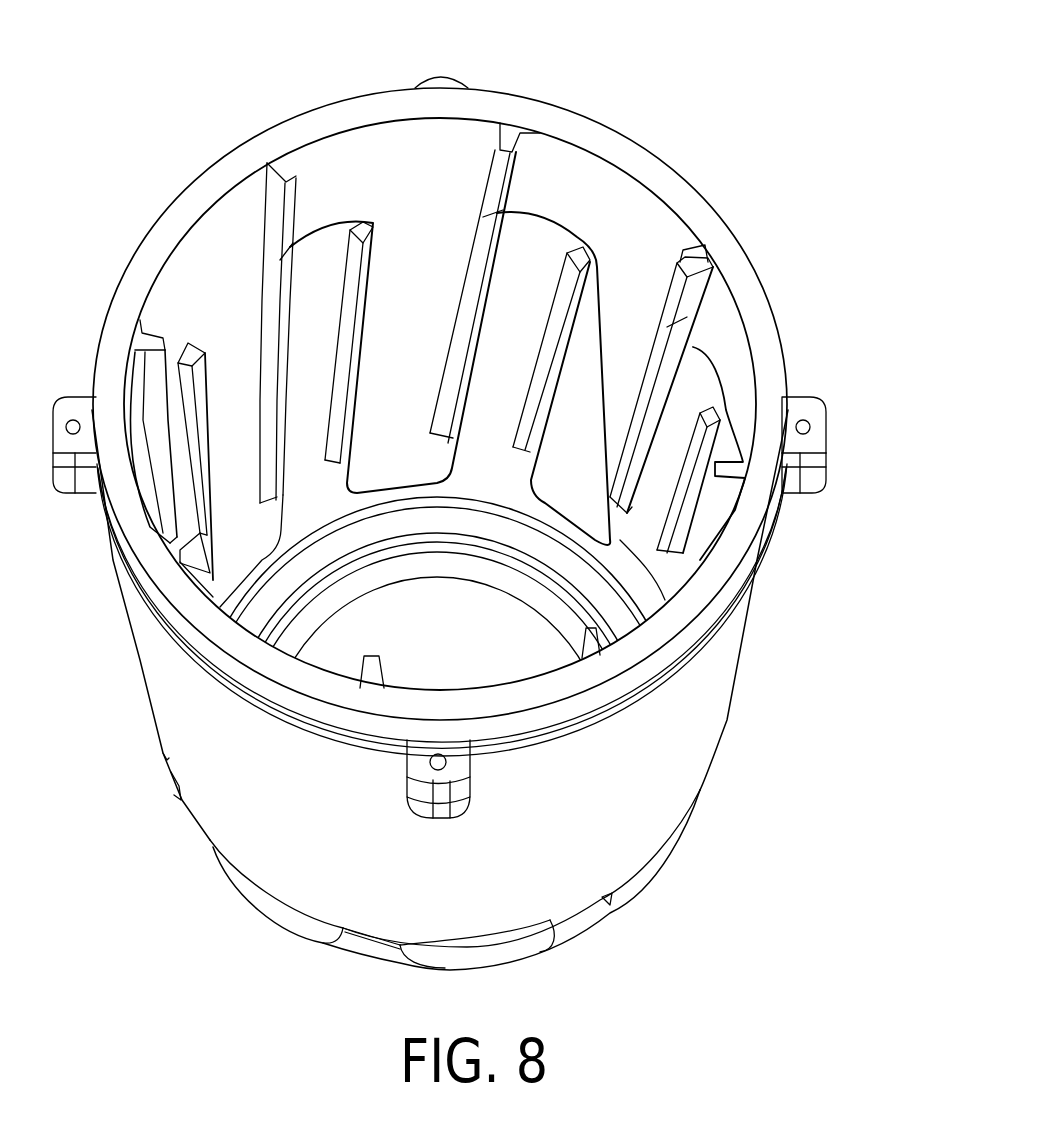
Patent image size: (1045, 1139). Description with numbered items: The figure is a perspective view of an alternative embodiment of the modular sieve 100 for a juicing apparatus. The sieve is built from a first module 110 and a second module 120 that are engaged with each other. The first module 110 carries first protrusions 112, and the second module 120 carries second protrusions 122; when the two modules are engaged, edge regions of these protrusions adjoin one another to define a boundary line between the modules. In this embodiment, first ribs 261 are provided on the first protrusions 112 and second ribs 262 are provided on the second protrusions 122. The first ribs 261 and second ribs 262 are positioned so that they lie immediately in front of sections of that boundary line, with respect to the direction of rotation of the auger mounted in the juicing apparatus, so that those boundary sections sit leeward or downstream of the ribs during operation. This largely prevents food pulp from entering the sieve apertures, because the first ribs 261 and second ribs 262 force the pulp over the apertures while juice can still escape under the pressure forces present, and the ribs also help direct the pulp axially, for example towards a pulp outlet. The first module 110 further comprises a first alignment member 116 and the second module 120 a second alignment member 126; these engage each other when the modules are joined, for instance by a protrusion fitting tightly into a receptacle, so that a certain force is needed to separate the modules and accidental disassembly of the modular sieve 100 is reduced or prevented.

The modular sieve 100 is at (150, 86).
The first module 110 is at (693, 722).
The first protrusions 112 is at (537, 250).
The first alignment member 116 is at (802, 483).
The second module 120 is at (728, 248).
The second protrusions 122 is at (632, 233).
The second alignment member 126 is at (798, 413).
The first ribs 261 is at (363, 230).
The second ribs 262 is at (697, 253).